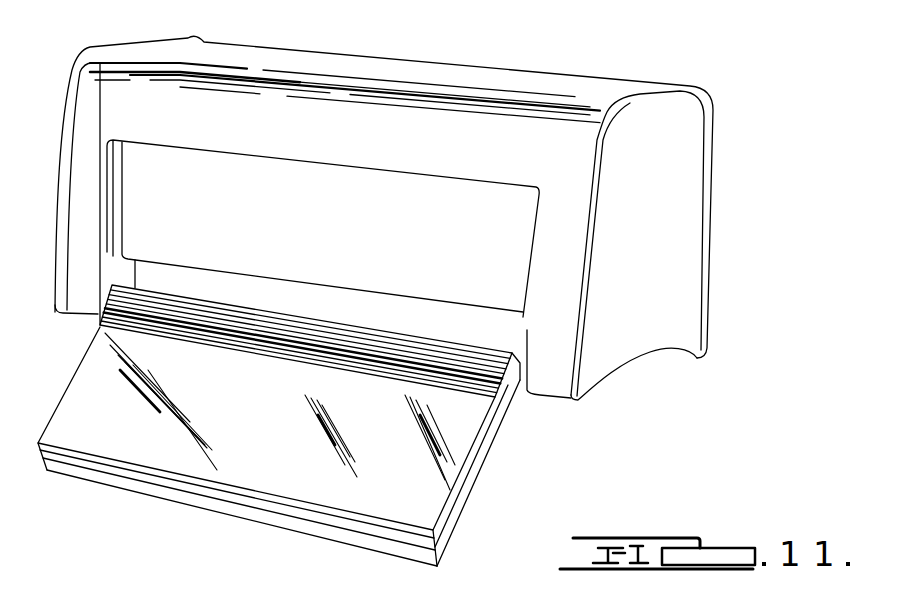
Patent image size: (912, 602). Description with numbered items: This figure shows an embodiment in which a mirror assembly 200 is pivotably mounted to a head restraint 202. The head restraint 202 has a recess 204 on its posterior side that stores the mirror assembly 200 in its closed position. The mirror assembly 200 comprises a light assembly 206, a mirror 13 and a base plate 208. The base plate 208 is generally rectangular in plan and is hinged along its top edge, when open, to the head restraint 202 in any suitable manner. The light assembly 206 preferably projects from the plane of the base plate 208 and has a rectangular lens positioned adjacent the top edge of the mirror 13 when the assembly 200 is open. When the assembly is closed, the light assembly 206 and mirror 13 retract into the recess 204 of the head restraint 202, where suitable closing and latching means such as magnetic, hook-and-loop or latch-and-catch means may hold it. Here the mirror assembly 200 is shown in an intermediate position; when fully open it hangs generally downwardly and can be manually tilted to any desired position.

The head restraint 202 is at (520, 82).
The recess 204 is at (293, 159).
The light assembly 206 is at (267, 337).
The mirror assembly 200 is at (487, 469).
The base plate 208 is at (307, 527).
The mirror 13 is at (282, 428).